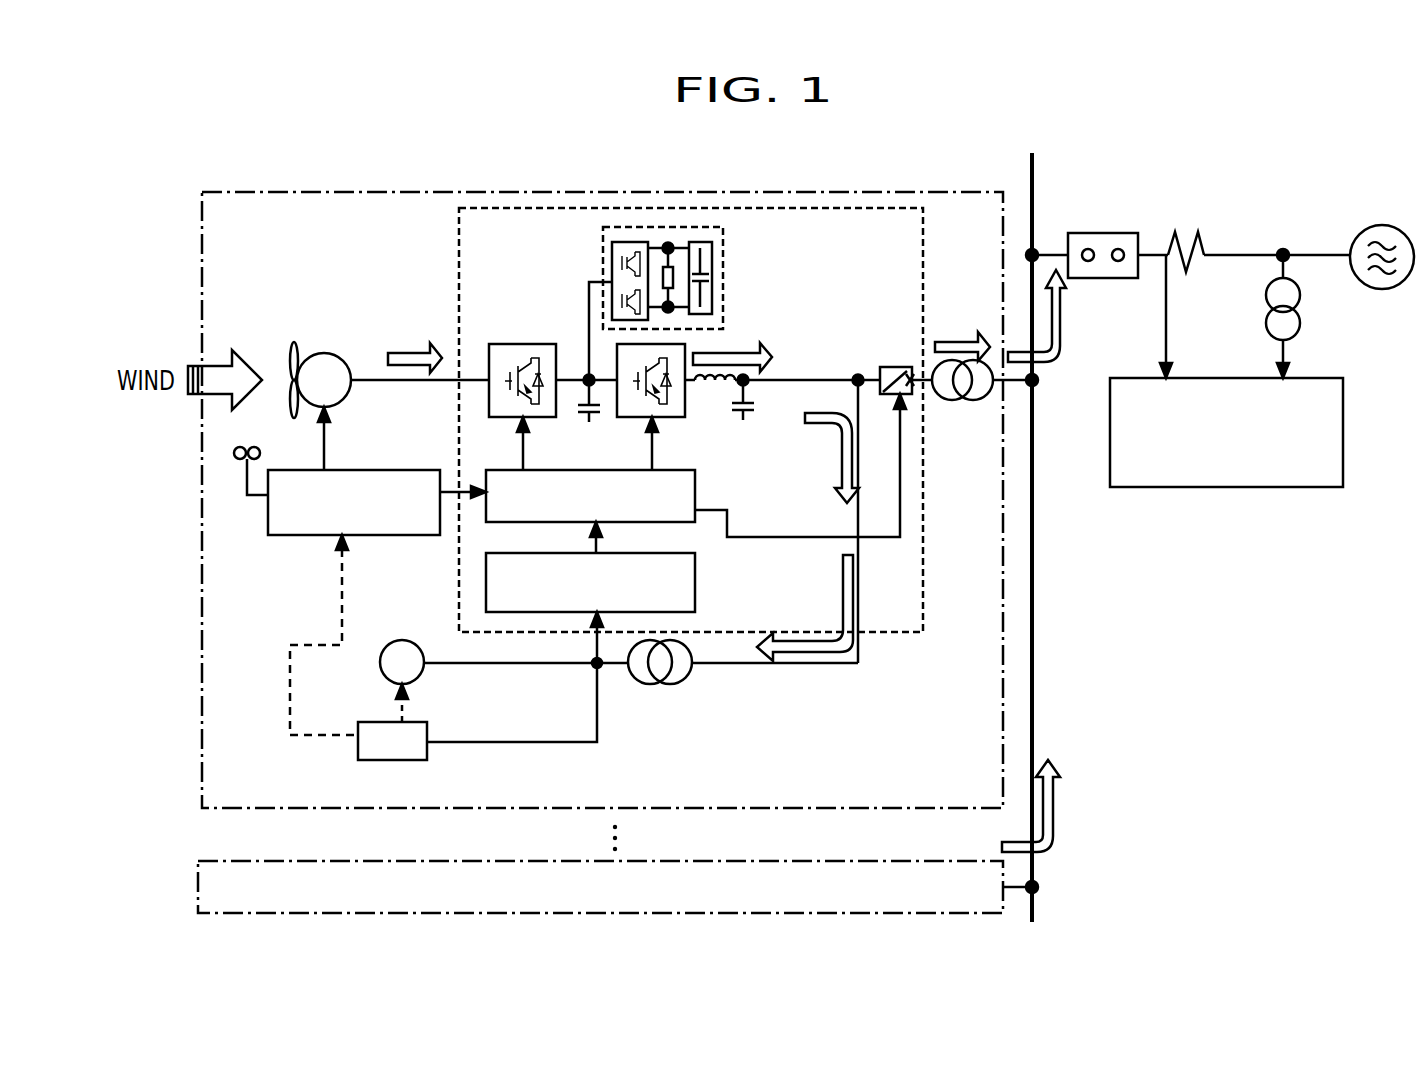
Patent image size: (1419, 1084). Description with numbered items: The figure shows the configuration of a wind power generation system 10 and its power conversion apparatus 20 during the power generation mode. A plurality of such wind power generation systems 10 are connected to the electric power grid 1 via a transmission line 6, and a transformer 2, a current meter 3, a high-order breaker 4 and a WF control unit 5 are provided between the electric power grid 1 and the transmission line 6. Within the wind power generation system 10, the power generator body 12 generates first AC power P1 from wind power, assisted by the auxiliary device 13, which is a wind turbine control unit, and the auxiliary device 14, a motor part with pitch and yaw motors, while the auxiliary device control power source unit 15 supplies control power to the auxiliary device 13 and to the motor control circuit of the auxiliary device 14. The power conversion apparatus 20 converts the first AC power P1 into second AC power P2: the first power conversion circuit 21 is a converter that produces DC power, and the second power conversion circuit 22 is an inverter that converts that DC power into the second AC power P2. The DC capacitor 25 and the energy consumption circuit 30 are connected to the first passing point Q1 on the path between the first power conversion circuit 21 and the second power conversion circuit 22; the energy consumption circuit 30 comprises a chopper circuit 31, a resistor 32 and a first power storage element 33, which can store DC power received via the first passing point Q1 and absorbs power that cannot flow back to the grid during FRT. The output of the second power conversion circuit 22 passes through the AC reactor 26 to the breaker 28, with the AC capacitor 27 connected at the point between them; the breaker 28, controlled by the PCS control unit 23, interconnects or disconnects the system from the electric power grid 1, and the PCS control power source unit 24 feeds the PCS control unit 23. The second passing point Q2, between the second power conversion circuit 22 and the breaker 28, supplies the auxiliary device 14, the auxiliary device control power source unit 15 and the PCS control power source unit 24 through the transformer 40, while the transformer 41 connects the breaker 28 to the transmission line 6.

The electric power grid 1 is at (1390, 226).
The transformer 2 is at (1300, 318).
The current meter 3 is at (1200, 246).
The high-order breaker 4 is at (1127, 233).
The WF control unit 5 is at (1300, 487).
The transmission line 6 is at (1034, 615).
The wind power generation system 10 is at (202, 585).
The power generator body 12 is at (322, 353).
The auxiliary device 13 is at (290, 535).
The auxiliary device 14 is at (380, 664).
The auxiliary device control power source unit 15 is at (358, 742).
The power conversion apparatus 20 is at (924, 248).
The first power conversion circuit 21 is at (520, 344).
The second power conversion circuit 22 is at (680, 344).
The PCS control unit 23 is at (695, 488).
The PCS control power source unit 24 is at (695, 567).
The DC capacitor 25 is at (589, 422).
The AC reactor 26 is at (716, 392).
The AC capacitor 27 is at (748, 420).
The breaker 28 is at (900, 367).
The energy consumption circuit 30 is at (723, 238).
The chopper circuit 31 is at (620, 242).
The resistor 32 is at (673, 280).
The first power storage element 33 is at (712, 272).
The transformer 40 is at (672, 685).
The transformer 41 is at (956, 400).
The first AC power P1 is at (412, 342).
The second AC power P2 is at (775, 357).
The first passing point Q1 is at (587, 378).
The second passing point Q2 is at (858, 378).